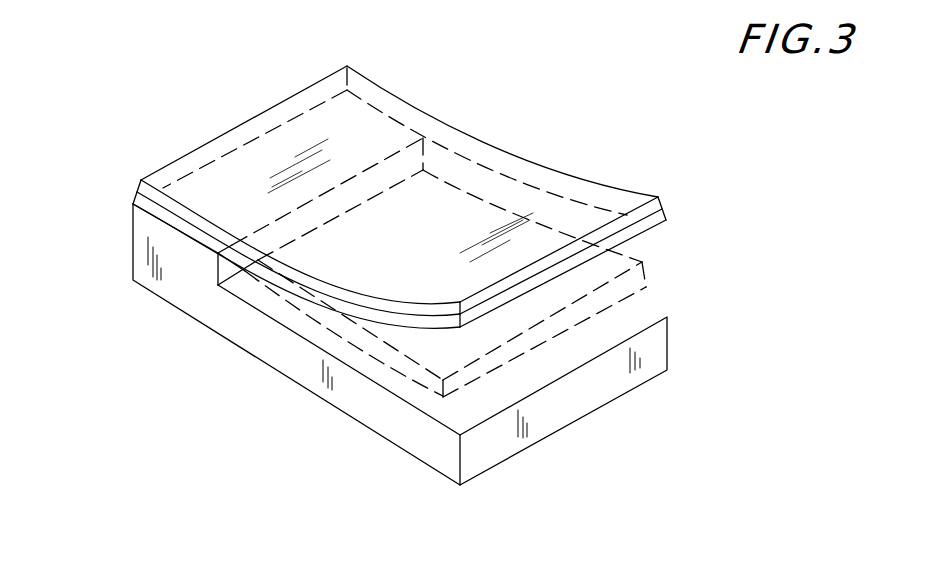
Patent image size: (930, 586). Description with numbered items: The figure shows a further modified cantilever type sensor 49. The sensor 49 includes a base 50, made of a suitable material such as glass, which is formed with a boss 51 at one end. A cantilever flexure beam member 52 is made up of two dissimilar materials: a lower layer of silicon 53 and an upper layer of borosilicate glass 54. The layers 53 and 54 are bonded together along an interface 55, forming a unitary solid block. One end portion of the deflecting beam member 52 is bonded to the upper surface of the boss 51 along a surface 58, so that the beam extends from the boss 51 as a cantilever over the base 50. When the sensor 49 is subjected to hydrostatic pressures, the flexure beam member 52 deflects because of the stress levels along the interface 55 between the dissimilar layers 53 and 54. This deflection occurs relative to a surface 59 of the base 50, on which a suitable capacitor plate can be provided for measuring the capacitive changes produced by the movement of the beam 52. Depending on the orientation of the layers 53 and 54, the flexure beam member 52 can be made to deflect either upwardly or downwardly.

The cantilever type sensor 49 is at (233, 351).
The base 50 is at (405, 428).
The boss 51 is at (210, 266).
The cantilever flexure beam member 52 is at (502, 197).
The lower layer of silicon 53 is at (508, 293).
The upper layer of borosilicate glass 54 is at (552, 258).
The interface 55 is at (363, 300).
The bonding surface 58 is at (157, 218).
The surface 59 is at (642, 318).